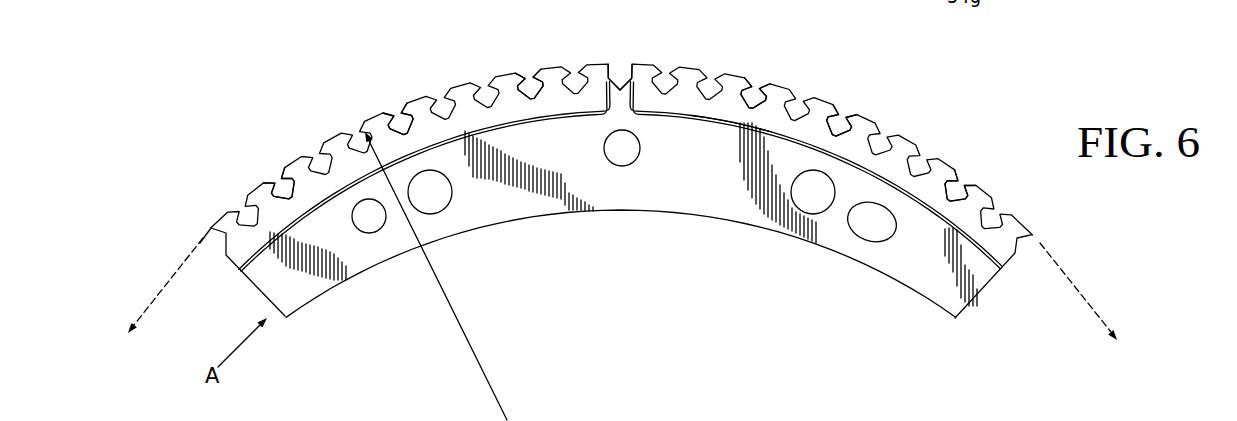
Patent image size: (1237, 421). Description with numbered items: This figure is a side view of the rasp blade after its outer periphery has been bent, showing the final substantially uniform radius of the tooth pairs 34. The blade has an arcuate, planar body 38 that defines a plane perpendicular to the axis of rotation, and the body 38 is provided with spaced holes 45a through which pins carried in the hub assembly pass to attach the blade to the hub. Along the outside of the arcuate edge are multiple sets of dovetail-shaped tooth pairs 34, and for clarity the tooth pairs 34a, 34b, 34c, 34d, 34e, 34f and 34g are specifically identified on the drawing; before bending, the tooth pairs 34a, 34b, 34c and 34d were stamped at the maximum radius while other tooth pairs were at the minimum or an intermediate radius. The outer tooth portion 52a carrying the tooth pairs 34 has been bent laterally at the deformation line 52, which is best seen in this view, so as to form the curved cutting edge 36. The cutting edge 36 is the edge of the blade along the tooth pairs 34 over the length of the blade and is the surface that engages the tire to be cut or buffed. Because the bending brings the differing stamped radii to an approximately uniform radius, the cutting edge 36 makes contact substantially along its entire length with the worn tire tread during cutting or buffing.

The tooth pairs 34 is at (334, 102).
The tooth pair 34a is at (282, 167).
The tooth pair 34b is at (393, 110).
The tooth pair 34c is at (523, 68).
The tooth pair 34d is at (613, 62).
The tooth pair 34e is at (749, 80).
The tooth pair 34f is at (835, 107).
The tooth pair 34g is at (960, 170).
The curved cutting edge 36 is at (168, 277).
The planar body 38 is at (977, 287).
The holes 45a is at (373, 233).
The deformation line 52 is at (962, 227).
The outer tooth portion 52a is at (735, 107).